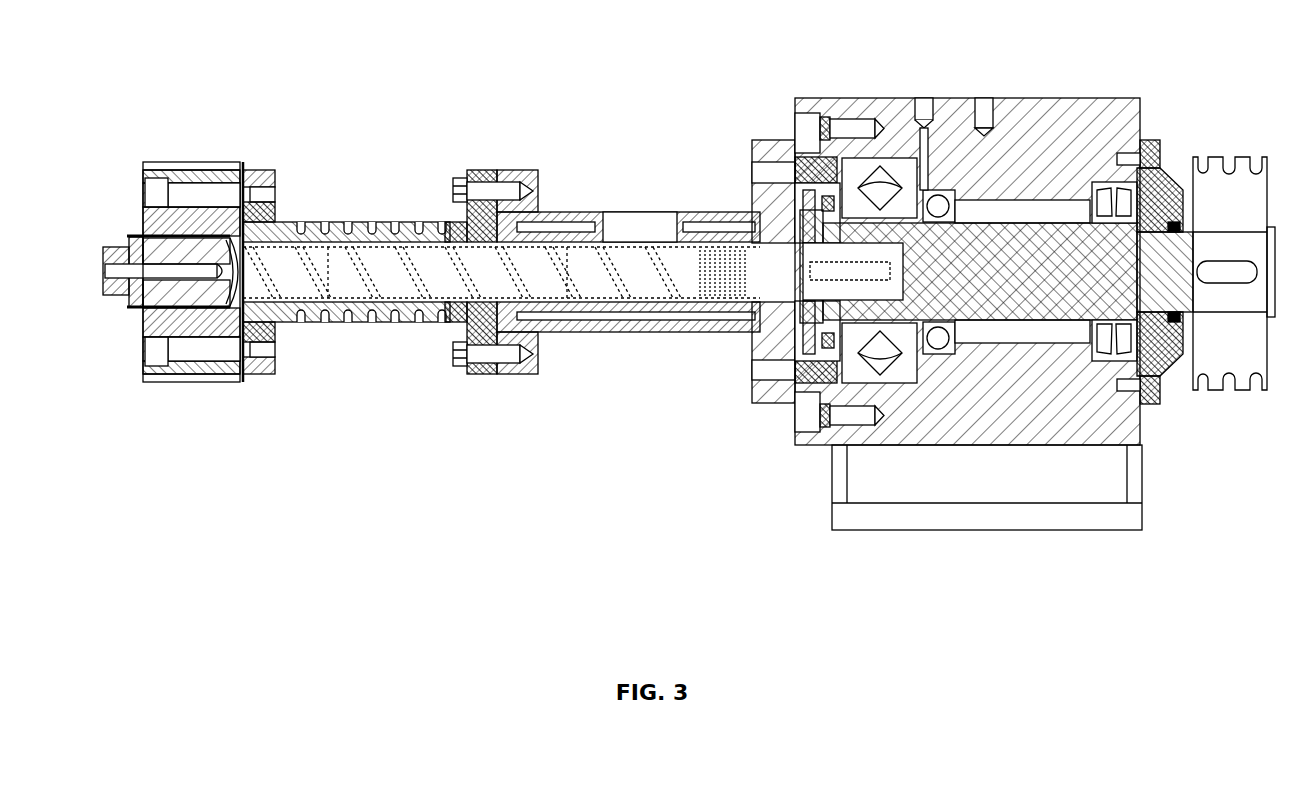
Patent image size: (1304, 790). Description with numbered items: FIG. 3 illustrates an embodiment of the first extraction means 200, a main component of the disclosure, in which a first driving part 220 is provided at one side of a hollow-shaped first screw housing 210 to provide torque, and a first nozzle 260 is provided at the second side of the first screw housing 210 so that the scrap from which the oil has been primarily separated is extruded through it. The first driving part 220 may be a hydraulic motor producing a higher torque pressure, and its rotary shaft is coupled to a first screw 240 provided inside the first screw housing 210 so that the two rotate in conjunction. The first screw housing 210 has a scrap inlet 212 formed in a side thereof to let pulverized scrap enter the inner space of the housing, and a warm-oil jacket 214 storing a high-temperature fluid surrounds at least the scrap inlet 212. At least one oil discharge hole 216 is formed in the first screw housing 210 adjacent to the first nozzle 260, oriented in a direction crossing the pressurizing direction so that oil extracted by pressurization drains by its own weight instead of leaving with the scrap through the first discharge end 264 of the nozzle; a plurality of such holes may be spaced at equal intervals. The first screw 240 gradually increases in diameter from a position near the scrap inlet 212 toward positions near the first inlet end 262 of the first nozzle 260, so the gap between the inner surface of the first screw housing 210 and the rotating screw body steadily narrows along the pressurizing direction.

The first extraction means 200 is at (77, 67).
The first screw housing 210 is at (774, 405).
The scrap inlet 212 is at (650, 226).
The warm-oil jacket 214 is at (572, 210).
The oil discharge hole 216 is at (368, 323).
The first driving part 220 is at (993, 488).
The first screw 240 is at (407, 213).
The first nozzle 260 is at (205, 380).
The first inlet end 262 is at (203, 200).
The first discharge end 264 is at (102, 272).